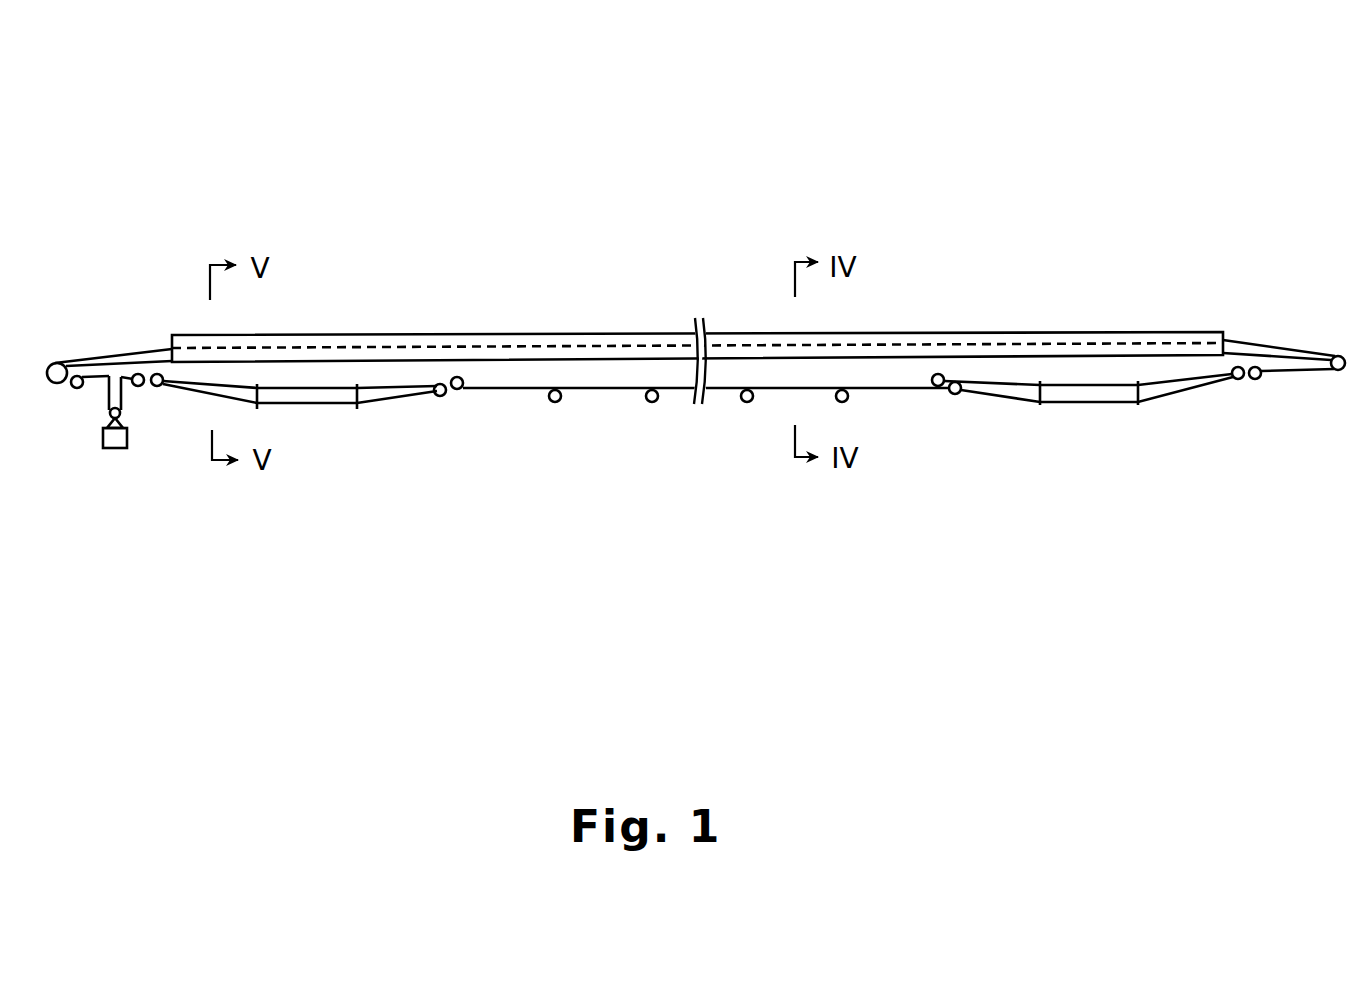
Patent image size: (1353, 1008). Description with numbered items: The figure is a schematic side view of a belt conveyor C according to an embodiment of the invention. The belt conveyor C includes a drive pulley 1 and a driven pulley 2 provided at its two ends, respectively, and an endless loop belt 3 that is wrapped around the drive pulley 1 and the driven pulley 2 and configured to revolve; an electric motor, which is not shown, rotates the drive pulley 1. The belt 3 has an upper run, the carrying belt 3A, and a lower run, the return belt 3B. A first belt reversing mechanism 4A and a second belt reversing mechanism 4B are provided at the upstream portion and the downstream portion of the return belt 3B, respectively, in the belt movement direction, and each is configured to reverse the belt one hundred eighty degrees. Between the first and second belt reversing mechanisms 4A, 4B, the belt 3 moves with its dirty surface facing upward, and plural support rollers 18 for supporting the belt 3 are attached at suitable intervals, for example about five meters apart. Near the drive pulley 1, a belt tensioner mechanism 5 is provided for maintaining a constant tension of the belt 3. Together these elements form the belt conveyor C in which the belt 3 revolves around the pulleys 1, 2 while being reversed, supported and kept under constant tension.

The drive pulley 1 is at (55, 384).
The driven pulley 2 is at (1338, 371).
The endless loop belt 3 is at (697, 353).
The carrying belt 3A is at (488, 330).
The return belt 3B is at (620, 390).
The first belt reversing mechanism 4A is at (306, 426).
The second belt reversing mechanism 4B is at (1056, 418).
The belt tensioner mechanism 5 is at (102, 456).
The support roller 18 is at (555, 402).
The belt conveyor C is at (796, 164).